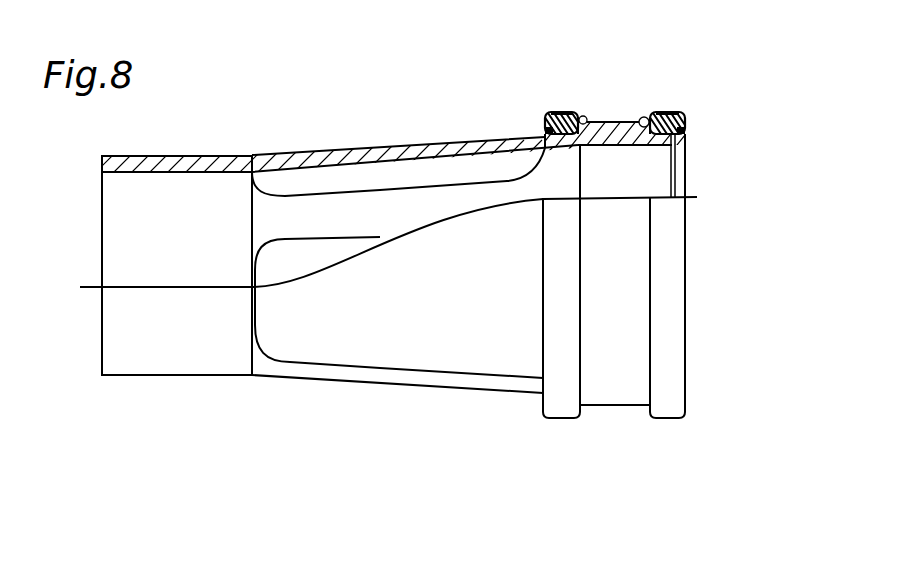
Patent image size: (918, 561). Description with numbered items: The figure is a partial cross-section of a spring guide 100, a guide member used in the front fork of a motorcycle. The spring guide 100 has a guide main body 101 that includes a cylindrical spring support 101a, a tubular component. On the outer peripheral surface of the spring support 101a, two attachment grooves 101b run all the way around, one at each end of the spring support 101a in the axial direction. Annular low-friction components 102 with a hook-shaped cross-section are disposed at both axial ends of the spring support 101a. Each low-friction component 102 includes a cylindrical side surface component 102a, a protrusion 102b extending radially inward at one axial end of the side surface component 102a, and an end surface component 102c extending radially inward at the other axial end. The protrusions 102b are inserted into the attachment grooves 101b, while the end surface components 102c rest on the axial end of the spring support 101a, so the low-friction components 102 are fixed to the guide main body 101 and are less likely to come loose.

The spring guide 100 is at (743, 90).
The guide main body 101 is at (289, 146).
The spring support 101a is at (620, 390).
The attachment groove 101b is at (663, 143).
The low-friction component 102 is at (562, 102).
The side surface component 102a is at (550, 112).
The protrusion 102b is at (648, 113).
The end surface component 102c is at (550, 124).